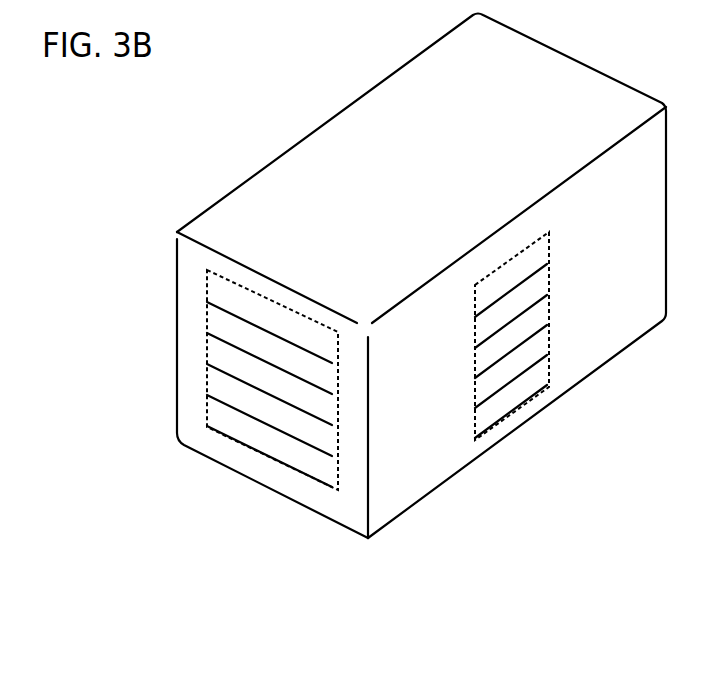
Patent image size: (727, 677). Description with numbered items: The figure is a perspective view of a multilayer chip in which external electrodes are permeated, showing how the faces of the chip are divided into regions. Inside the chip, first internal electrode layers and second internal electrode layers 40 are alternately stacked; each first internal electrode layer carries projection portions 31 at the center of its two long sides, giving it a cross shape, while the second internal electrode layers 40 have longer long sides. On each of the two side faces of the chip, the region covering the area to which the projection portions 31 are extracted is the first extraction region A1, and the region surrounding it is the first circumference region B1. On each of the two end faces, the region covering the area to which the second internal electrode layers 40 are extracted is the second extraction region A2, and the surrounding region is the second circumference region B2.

The second internal electrode layer 40 is at (232, 346).
The projection portion 31 is at (520, 378).
The first extraction region A1 is at (550, 348).
The second extraction region A2 is at (207, 427).
The first circumference region B1 is at (445, 443).
The second circumference region B2 is at (357, 472).